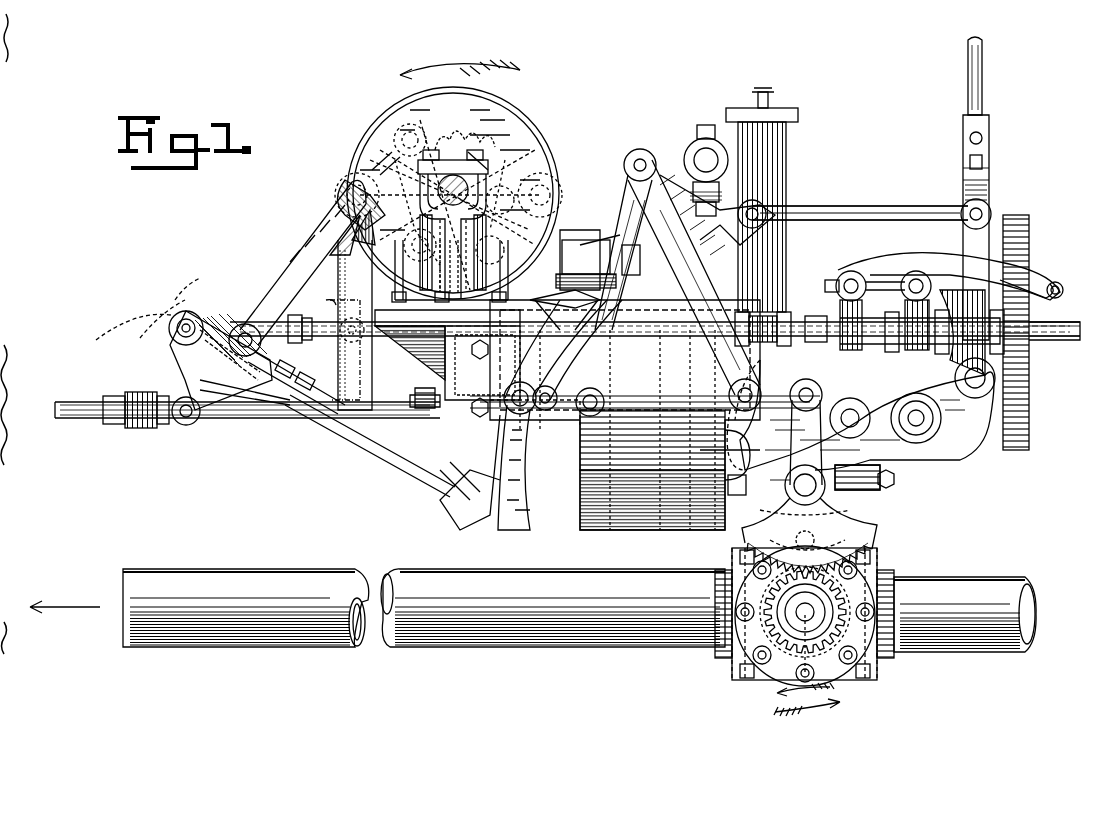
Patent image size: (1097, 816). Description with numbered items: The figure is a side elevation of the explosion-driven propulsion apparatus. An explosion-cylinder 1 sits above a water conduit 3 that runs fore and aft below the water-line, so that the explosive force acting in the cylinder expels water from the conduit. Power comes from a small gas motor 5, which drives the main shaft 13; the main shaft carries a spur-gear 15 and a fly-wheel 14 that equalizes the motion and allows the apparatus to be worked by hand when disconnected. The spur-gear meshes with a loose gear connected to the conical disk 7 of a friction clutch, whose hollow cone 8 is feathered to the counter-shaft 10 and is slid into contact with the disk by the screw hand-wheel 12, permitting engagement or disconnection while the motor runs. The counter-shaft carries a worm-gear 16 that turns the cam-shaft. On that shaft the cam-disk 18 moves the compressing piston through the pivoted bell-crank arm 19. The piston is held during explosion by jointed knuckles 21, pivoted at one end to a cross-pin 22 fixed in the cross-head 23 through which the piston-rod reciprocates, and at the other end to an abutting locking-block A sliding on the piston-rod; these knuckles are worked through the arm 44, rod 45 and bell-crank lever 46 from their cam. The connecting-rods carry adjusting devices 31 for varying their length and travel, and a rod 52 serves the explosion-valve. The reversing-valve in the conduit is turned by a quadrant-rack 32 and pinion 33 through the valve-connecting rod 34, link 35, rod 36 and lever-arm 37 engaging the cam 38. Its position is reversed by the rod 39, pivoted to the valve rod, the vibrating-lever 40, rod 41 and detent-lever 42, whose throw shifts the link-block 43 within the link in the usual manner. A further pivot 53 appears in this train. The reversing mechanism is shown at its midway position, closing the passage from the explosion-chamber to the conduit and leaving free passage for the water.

The explosion-cylinder 1 is at (625, 430).
The water conduit 3 is at (272, 572).
The motor 5 is at (786, 160).
The conical disk 7 is at (590, 248).
The hollow cone 8 is at (586, 264).
The counter-shaft 10 is at (630, 239).
The screw hand-wheel 12 is at (632, 260).
The main shaft 13 is at (950, 328).
The fly-wheel 14 is at (1030, 222).
The spur-gear 15 is at (565, 310).
The worm-gear 16 is at (450, 271).
The cam-disk 18 is at (520, 92).
The bell-crank arm 19 is at (372, 360).
The jointed knuckle 21 is at (290, 372).
The cross-pin 22 is at (186, 424).
The cross-head 23 is at (146, 428).
The adjusting device 31 is at (808, 266).
The quadrant-rack 32 is at (858, 524).
The pinion 33 is at (804, 631).
The valve-connecting rod 34 is at (645, 392).
The link 35 is at (499, 467).
The rod 36 is at (395, 452).
The lever-arm 37 is at (312, 262).
The cam 38 is at (448, 200).
The rod 39 is at (565, 357).
The vibrating-lever 40 is at (701, 285).
The rod 41 is at (853, 209).
The detent-lever 42 is at (989, 188).
The link-block 43 is at (518, 358).
The arm 44 is at (198, 362).
The rod 45 is at (210, 325).
The bell-crank lever 46 is at (324, 293).
The rod 52 is at (838, 272).
The roller 53 is at (925, 310).
The locking-block A is at (432, 395).